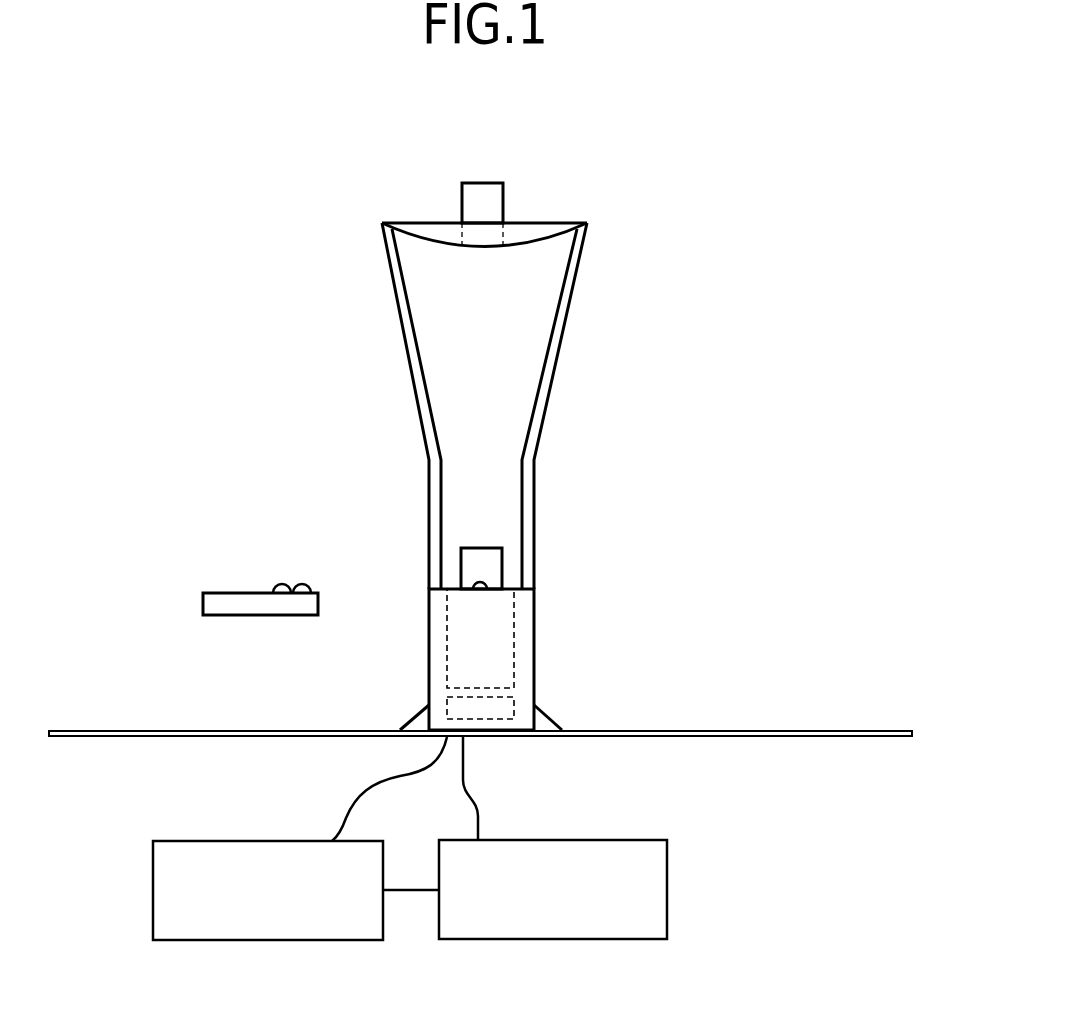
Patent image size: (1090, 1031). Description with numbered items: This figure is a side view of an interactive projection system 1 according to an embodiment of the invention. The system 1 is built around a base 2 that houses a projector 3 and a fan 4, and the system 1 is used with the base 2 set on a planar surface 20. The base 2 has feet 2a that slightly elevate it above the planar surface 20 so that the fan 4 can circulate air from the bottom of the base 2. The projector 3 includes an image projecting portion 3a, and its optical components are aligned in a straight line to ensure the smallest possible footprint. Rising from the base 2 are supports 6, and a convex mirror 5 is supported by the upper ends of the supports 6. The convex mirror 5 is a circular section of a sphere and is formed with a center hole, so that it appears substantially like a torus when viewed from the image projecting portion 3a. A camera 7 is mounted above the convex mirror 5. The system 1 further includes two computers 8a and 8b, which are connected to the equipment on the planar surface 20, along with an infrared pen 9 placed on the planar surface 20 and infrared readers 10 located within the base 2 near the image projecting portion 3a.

The interactive projection system 1 is at (627, 166).
The base 2 is at (534, 608).
The feet 2a is at (408, 712).
The projector 3 is at (514, 652).
The image projecting portion 3a is at (502, 563).
The fan 4 is at (447, 700).
The convex mirror 5 is at (428, 240).
The supports 6 is at (409, 362).
The camera 7 is at (503, 198).
The computer 8a is at (200, 840).
The computer 8b is at (608, 840).
The infrared pen 9 is at (242, 592).
The infrared readers 10 is at (478, 582).
The planar surface 20 is at (752, 730).